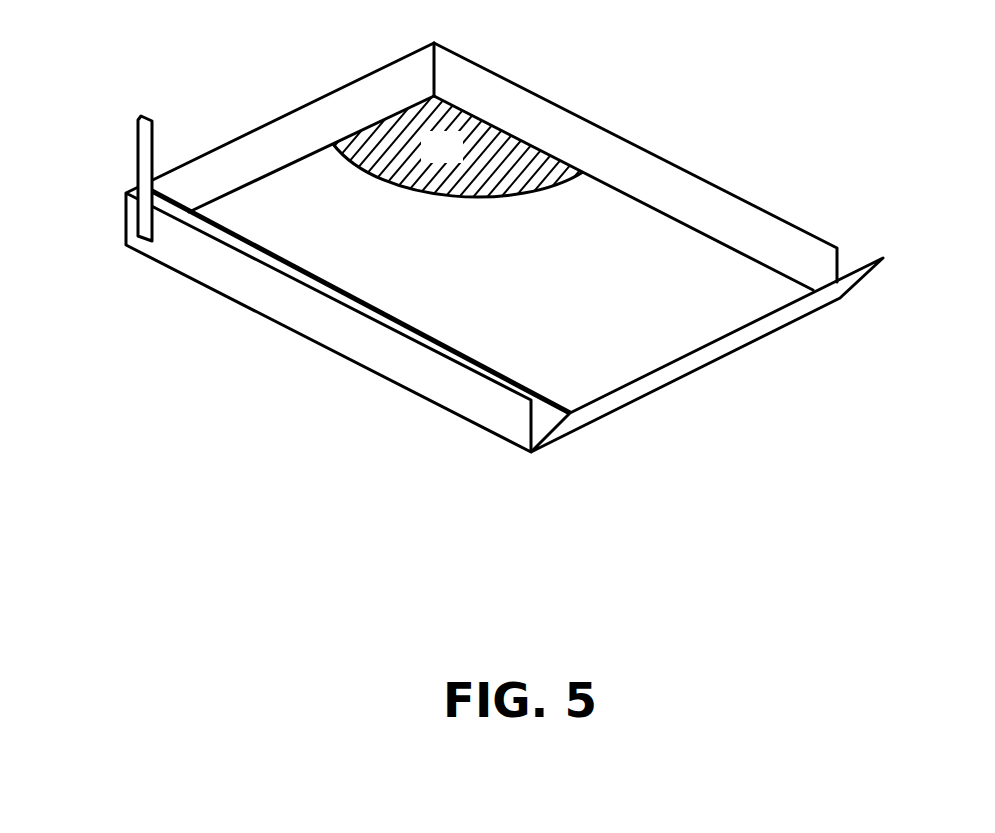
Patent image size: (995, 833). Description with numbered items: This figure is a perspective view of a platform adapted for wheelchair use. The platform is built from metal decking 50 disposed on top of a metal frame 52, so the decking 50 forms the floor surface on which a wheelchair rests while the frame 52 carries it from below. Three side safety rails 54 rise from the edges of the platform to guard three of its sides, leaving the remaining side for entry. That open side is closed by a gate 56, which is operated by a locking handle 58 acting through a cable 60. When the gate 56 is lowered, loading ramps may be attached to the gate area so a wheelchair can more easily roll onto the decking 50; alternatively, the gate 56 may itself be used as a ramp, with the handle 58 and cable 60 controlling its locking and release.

The metal decking 50 is at (501, 194).
The metal frame 52 is at (464, 150).
The side safety rails 54 is at (293, 108).
The gate 56 is at (695, 366).
The locking handle 58 is at (136, 145).
The cable 60 is at (385, 326).